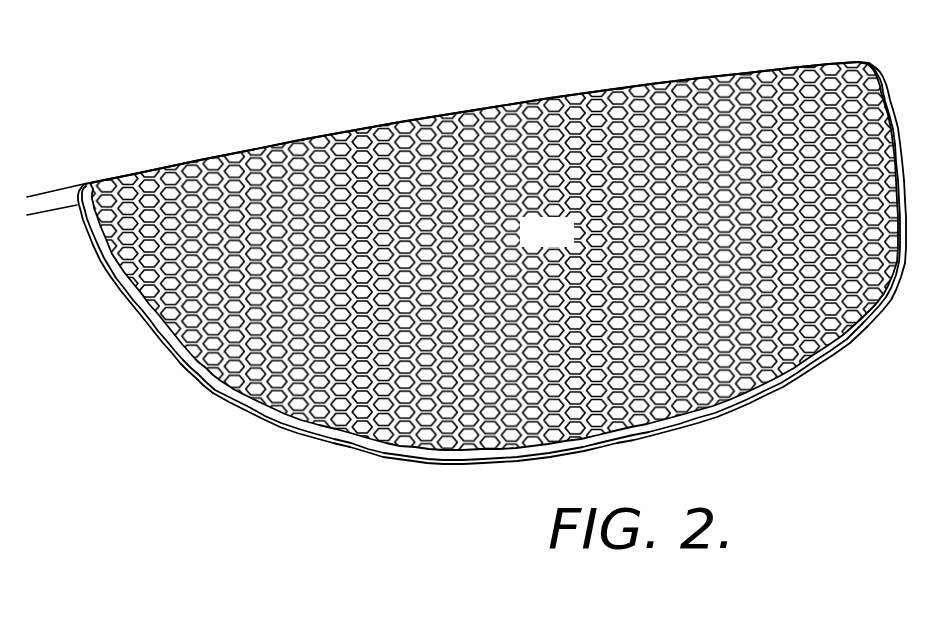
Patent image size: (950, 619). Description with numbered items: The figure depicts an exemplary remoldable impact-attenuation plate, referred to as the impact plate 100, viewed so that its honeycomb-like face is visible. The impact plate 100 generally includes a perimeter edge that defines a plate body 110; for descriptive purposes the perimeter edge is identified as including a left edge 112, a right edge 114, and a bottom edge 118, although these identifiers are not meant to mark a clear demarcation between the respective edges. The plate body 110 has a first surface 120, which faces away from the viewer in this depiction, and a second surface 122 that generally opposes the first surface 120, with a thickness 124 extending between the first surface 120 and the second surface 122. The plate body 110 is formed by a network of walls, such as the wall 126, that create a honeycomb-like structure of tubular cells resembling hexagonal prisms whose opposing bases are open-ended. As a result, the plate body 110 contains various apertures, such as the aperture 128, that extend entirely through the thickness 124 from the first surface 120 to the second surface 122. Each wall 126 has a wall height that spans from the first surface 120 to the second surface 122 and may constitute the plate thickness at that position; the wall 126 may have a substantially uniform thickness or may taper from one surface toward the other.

The impact plate 100 is at (370, 56).
The plate body 110 is at (557, 140).
The left edge 112 is at (112, 277).
The right edge 114 is at (898, 128).
The bottom edge 118 is at (615, 443).
The first surface 120 is at (206, 396).
The second surface 122 is at (570, 244).
The thickness 124 is at (31, 242).
The wall 126 is at (300, 398).
The aperture 128 is at (510, 100).